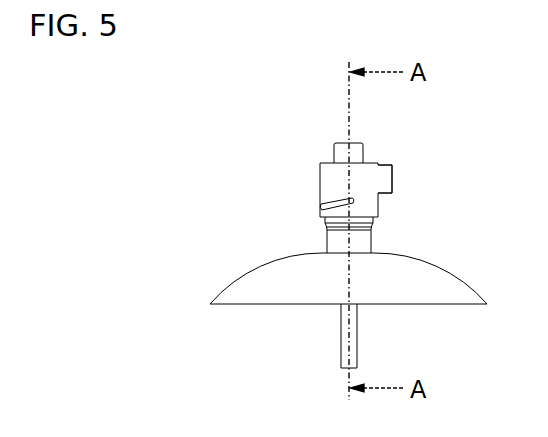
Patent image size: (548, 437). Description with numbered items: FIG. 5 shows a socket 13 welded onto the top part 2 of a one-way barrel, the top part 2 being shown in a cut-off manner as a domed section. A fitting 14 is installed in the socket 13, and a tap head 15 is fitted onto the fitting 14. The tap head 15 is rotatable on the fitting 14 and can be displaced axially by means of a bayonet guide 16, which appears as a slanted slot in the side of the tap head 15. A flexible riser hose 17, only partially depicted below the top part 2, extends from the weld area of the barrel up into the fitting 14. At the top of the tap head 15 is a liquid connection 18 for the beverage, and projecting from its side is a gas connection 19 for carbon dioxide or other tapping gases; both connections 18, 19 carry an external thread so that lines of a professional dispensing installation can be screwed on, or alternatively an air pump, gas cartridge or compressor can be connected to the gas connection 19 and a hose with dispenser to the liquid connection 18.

The top part 2 is at (440, 283).
The socket 13 is at (373, 238).
The fitting 14 is at (330, 221).
The tap head 15 is at (316, 171).
The bayonet guide 16 is at (318, 208).
The flexible riser hose 17 is at (341, 330).
The liquid connection 18 is at (352, 150).
The gas connection 19 is at (384, 172).